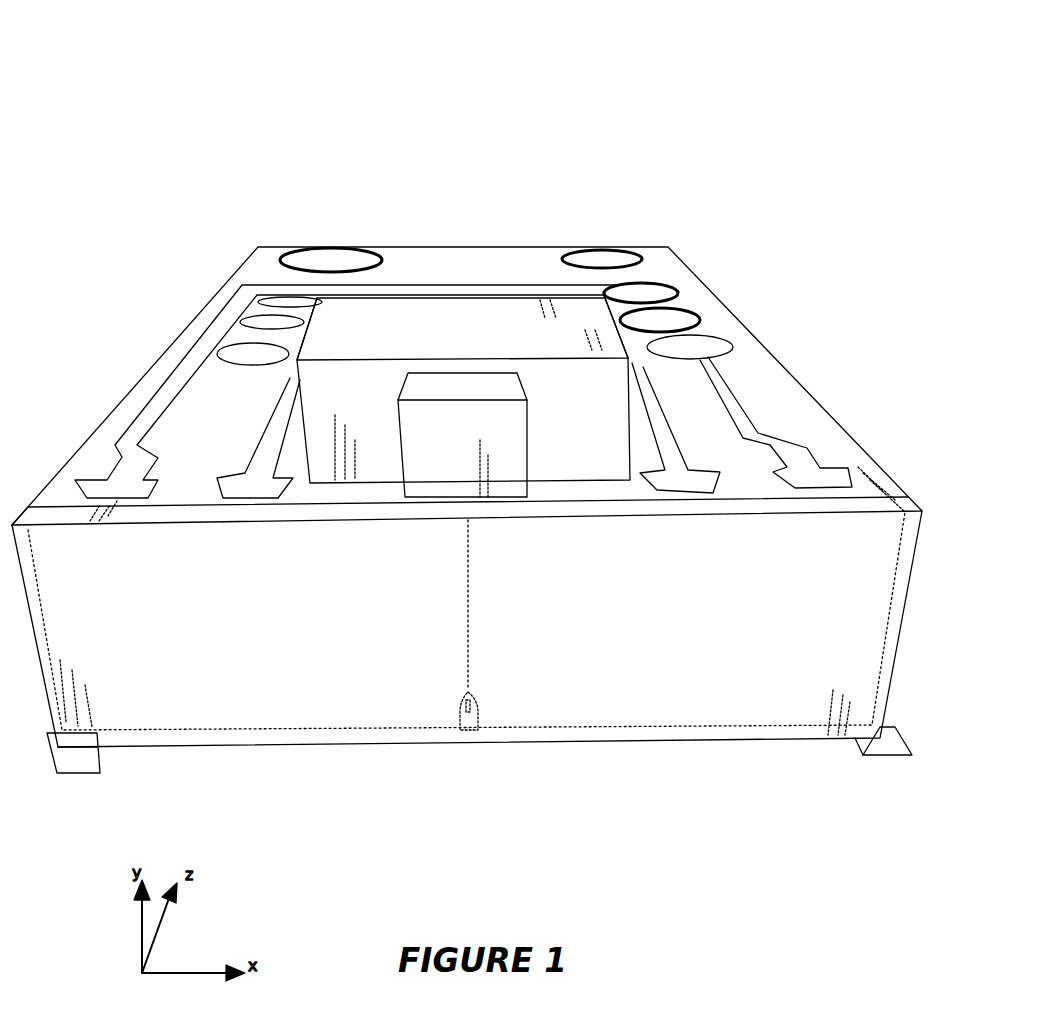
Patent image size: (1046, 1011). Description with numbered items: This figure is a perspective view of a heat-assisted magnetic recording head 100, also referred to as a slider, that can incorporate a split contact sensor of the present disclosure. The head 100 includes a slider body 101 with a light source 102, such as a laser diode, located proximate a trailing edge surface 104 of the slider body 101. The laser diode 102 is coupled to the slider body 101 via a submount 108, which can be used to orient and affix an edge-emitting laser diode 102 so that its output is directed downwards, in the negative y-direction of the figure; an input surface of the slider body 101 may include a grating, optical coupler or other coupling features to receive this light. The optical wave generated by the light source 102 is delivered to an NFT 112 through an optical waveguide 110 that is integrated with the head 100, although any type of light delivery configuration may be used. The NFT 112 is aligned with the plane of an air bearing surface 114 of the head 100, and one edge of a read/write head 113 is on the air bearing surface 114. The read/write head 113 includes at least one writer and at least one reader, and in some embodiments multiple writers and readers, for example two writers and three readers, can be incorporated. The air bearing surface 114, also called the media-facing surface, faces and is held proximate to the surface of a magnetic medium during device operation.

The HAMR head 100 is at (655, 111).
The slider body 101 is at (248, 264).
The light source 102 is at (530, 427).
The trailing edge surface 104 is at (77, 774).
The submount 108 is at (383, 308).
The optical waveguide 110 is at (468, 615).
The NFT 112 is at (468, 731).
The read/write head 113 is at (478, 731).
The air bearing surface 114 is at (863, 756).